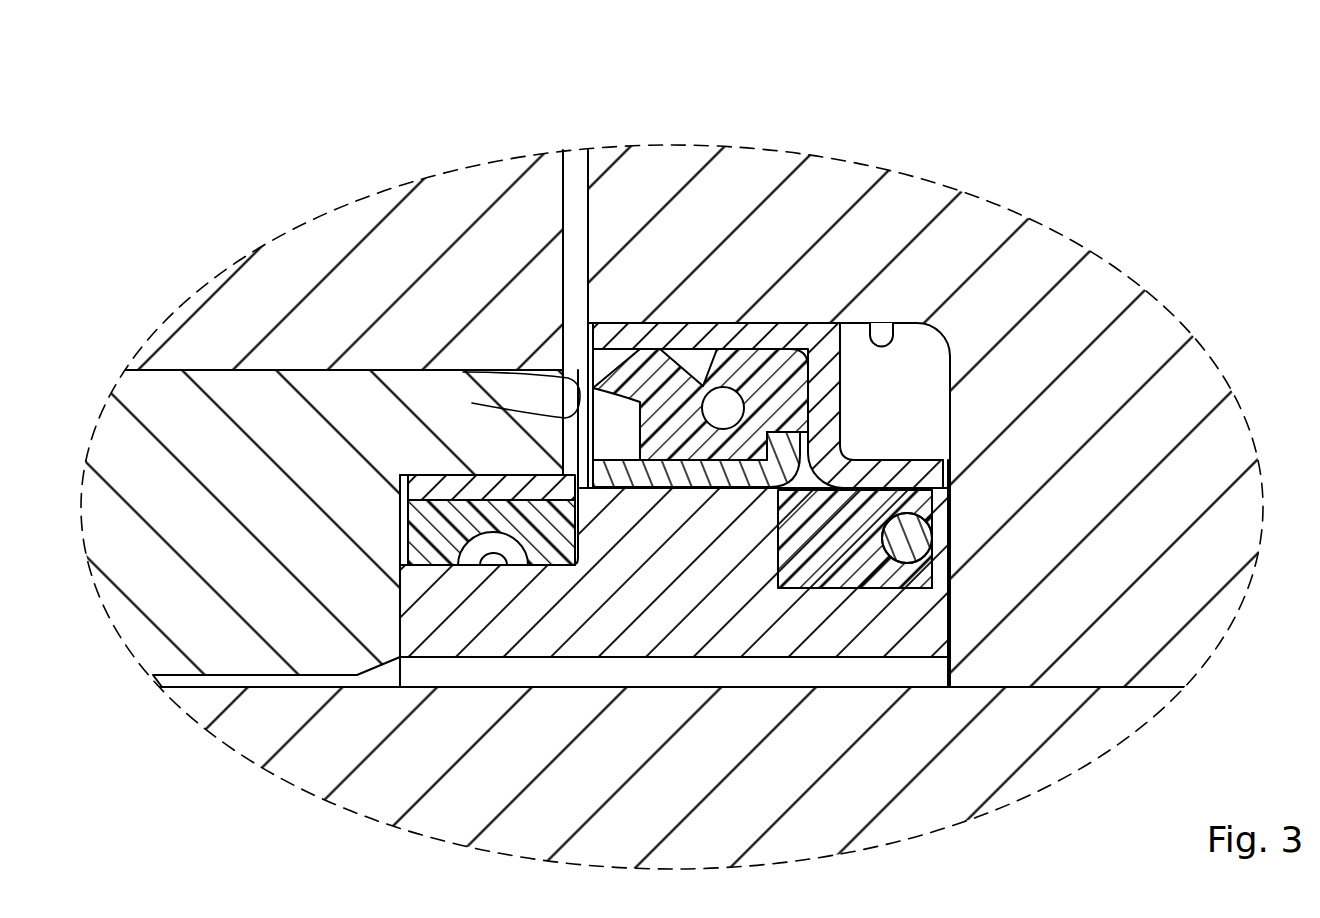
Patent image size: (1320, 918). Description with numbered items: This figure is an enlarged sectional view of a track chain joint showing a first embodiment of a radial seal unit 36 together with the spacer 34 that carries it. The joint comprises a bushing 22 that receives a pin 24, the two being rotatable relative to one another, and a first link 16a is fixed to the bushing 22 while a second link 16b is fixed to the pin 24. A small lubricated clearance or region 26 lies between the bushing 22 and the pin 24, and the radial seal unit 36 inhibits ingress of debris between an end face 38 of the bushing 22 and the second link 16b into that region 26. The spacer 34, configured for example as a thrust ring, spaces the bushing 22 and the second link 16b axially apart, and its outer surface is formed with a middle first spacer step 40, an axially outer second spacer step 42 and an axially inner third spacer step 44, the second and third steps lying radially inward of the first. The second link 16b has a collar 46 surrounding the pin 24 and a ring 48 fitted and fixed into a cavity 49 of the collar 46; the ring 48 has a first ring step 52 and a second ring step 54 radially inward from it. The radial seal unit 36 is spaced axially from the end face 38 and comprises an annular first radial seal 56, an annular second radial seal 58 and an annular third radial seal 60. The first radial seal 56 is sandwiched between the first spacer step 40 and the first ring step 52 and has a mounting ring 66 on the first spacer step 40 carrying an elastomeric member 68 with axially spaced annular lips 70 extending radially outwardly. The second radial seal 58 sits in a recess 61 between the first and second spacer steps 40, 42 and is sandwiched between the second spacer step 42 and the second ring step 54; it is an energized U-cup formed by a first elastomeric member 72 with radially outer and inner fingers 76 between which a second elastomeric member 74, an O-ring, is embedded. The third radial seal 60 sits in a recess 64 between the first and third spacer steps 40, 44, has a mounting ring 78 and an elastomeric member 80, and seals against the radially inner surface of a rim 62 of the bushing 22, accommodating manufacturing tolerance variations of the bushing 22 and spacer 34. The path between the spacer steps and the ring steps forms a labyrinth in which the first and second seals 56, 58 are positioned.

The first link 16a is at (316, 247).
The second link 16b is at (903, 205).
The bushing 22 is at (118, 432).
The pin 24 is at (367, 800).
The region 26 is at (228, 674).
The spacer 34 is at (626, 655).
The radial seal unit 36 is at (805, 80).
The end face 38 is at (508, 395).
The first spacer step 40 is at (690, 489).
The second spacer step 42 is at (903, 583).
The third spacer step 44 is at (487, 560).
The collar 46 is at (1100, 290).
The ring 48 is at (852, 388).
The cavity 49 is at (893, 338).
The first ring step 52 is at (715, 341).
The second ring step 54 is at (905, 470).
The first radial seal 56 is at (689, 362).
The second radial seal 58 is at (962, 492).
The third radial seal 60 is at (412, 456).
The recess 61 is at (778, 571).
The rim 62 is at (493, 386).
The recess 64 is at (548, 553).
The mounting ring 66 is at (652, 485).
The elastomeric member 68 is at (842, 378).
The annular lips 70 is at (637, 362).
The first elastomeric member 72 is at (817, 557).
The second elastomeric member 74 is at (917, 540).
The fingers 76 is at (927, 510).
The mounting ring 78 is at (486, 488).
The elastomeric member 80 is at (410, 540).